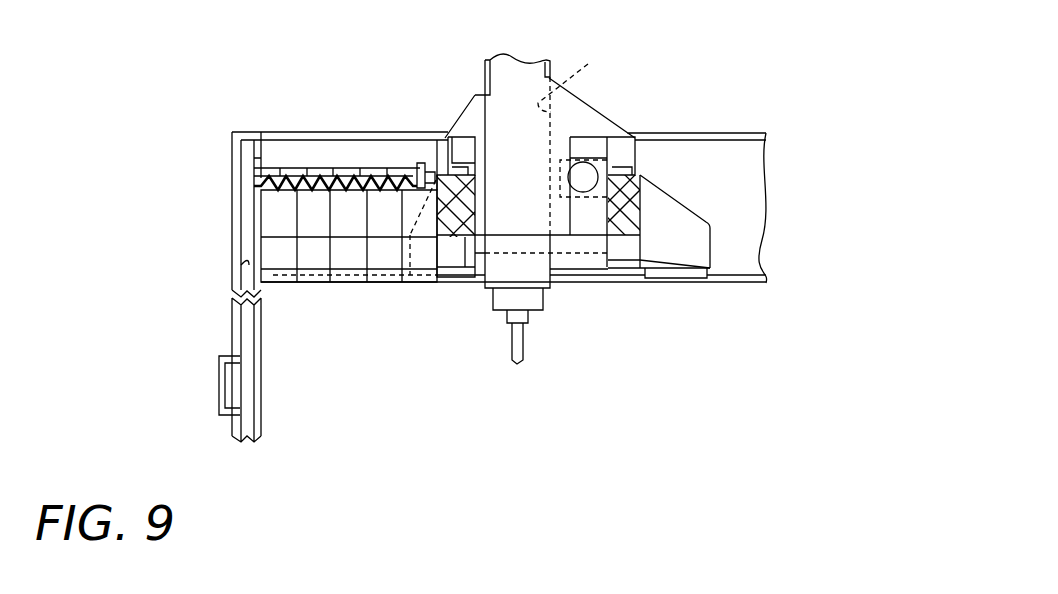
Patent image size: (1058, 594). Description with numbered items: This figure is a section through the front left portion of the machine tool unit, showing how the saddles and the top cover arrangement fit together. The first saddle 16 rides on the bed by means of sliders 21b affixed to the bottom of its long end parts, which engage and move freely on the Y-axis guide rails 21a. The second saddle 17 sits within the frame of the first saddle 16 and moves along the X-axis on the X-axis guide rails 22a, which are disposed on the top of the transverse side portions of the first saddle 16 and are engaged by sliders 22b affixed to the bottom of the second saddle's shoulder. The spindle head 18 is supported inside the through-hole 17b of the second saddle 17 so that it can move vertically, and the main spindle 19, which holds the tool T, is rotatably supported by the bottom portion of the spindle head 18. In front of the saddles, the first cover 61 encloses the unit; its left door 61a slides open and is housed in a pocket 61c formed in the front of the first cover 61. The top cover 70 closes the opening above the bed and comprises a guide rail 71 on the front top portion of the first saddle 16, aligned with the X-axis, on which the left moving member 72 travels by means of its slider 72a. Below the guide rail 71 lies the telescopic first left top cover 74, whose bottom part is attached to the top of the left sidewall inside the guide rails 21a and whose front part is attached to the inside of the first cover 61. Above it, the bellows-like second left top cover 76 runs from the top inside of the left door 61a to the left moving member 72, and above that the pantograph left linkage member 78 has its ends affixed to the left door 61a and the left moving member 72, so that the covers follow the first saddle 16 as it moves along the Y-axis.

The first cover 61 is at (243, 131).
The left door 61a is at (243, 330).
The pocket 61c is at (241, 264).
The top cover 70 is at (377, 323).
The guide rail 71 is at (443, 132).
The left moving member 72 is at (416, 162).
The slider 72a is at (430, 172).
The first left top cover 74 is at (313, 281).
The second left top cover 76 is at (343, 176).
The left linkage member 78 is at (292, 167).
The guide rail 22a is at (455, 136).
The slider 22b is at (470, 136).
The second saddle 17 is at (593, 118).
The through-hole 17b is at (582, 80).
The first saddle 16 is at (637, 200).
The spindle head 18 is at (545, 258).
The main spindle 19 is at (540, 305).
The tool T is at (522, 345).
The guide rail 21a is at (728, 277).
The slider 21b is at (453, 281).